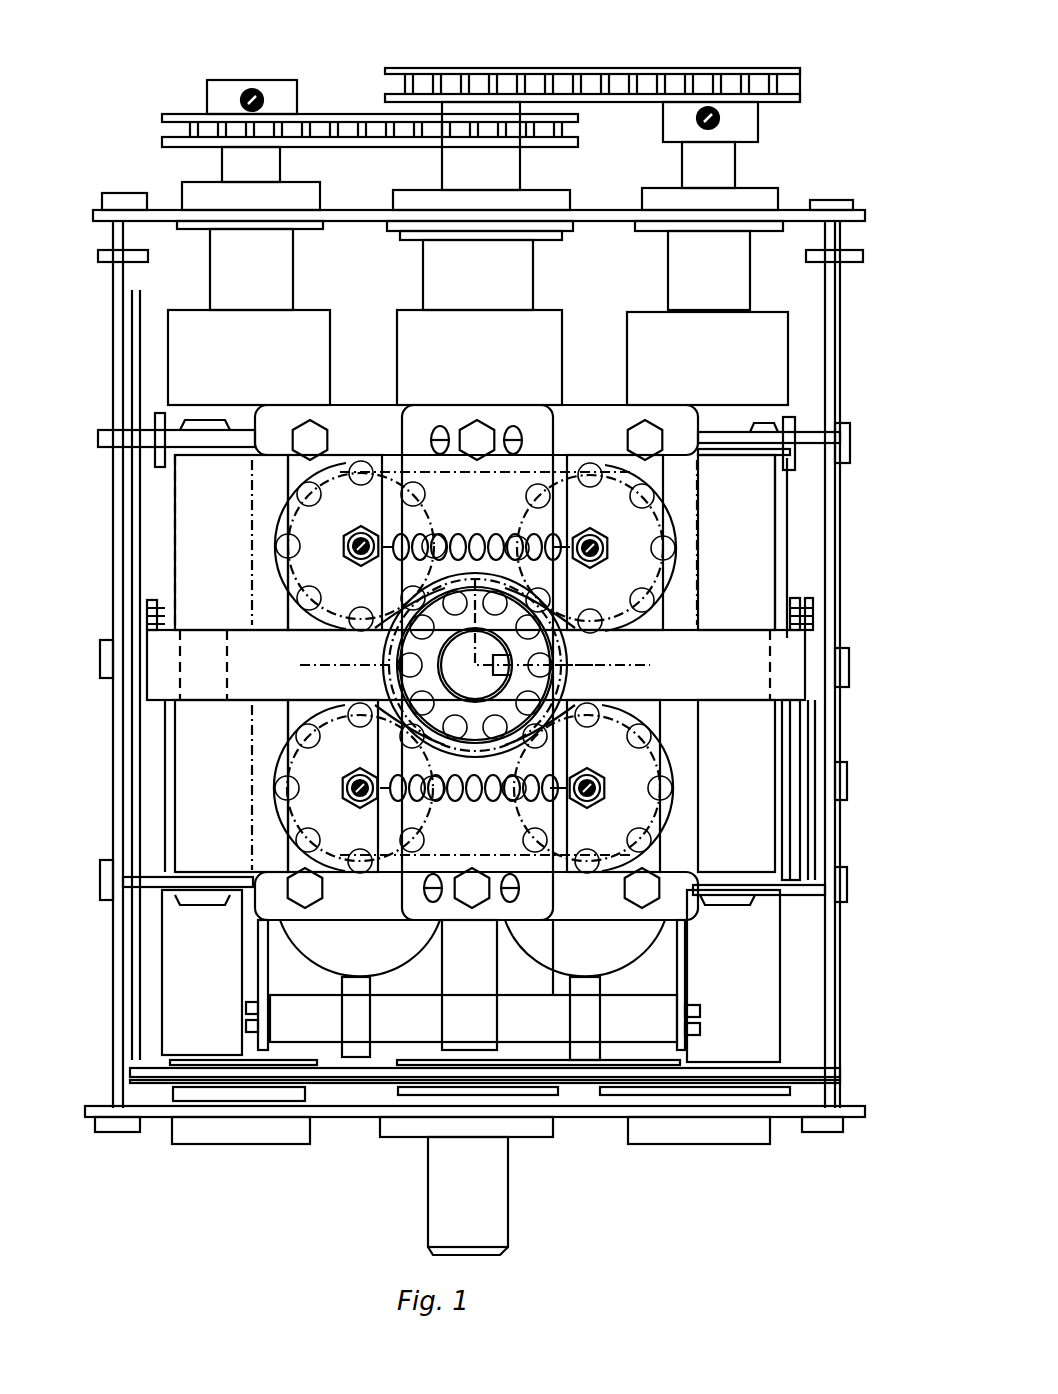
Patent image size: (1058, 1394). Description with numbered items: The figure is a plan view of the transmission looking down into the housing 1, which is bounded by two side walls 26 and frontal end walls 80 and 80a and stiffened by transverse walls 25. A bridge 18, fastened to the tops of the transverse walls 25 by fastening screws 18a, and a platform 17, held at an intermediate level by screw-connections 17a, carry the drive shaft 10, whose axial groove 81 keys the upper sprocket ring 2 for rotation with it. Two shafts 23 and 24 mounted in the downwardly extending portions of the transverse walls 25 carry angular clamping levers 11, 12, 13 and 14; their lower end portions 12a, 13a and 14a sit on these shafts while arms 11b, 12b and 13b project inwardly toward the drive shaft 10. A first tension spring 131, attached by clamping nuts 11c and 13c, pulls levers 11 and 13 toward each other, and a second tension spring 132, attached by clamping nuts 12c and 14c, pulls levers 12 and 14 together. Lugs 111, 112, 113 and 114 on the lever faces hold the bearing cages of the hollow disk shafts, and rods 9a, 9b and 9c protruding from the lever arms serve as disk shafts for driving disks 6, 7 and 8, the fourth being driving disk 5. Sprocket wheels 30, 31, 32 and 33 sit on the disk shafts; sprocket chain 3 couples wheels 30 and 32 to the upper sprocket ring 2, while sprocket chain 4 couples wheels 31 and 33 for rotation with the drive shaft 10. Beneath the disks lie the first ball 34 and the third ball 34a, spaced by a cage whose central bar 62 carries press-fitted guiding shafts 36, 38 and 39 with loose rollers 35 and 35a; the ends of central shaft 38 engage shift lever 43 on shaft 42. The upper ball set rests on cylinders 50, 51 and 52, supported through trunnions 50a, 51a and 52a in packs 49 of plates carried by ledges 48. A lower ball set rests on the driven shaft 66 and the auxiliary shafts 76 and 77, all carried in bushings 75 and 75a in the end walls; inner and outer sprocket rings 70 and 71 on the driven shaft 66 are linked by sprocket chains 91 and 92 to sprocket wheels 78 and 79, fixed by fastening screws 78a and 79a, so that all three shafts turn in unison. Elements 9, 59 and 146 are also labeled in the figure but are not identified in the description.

The housing 1 is at (838, 385).
The upper sprocket ring 2 is at (435, 725).
The upper sprocket chain 3 is at (360, 685).
The lower sprocket chain 4 is at (425, 465).
The driving disk 5 is at (688, 837).
The driving disk 6 is at (698, 537).
The driving disk 7 is at (248, 740).
The driving disk 8 is at (265, 493).
The tension nut 9 is at (606, 790).
The rod 9a is at (610, 552).
The rod 9b is at (343, 790).
The rod 9c is at (342, 545).
The drive shaft 10 is at (491, 665).
The clamping lever 11 is at (736, 786).
The lever arm 11b is at (662, 720).
The clamping nut 11c is at (587, 778).
The clamping lever 12 is at (736, 542).
The lower end portion 12a is at (777, 500).
The lever arm 12b is at (638, 650).
The clamping nut 12c is at (642, 536).
The clamping lever 13 is at (231, 786).
The lower end portion 13a is at (168, 795).
The lever arm 13b is at (345, 674).
The clamping nut 13c is at (333, 768).
The clamping lever 14 is at (231, 542).
The lower end portion 14a is at (175, 514).
The clamping nut 14c is at (355, 534).
The platform 17 is at (345, 408).
The screw-connection 17a is at (307, 422).
The bridge 18 is at (548, 405).
The fastening screw 18a is at (490, 421).
The shaft 23 is at (798, 431).
The shaft 24 is at (168, 435).
The transverse wall 25 is at (186, 426).
The side wall 26 is at (125, 365).
The sprocket wheel 30 is at (613, 786).
The sprocket wheel 31 is at (615, 542).
The sprocket wheel 32 is at (333, 786).
The sprocket wheel 33 is at (335, 542).
The first ball 34 is at (585, 948).
The third ball 34a is at (360, 948).
The loose roller 35 is at (583, 1060).
The loose roller 35a is at (345, 1157).
The guiding shaft 36 is at (325, 1115).
The central guiding shaft 38 is at (847, 772).
The guiding shaft 39 is at (152, 476).
The shaft 42 is at (100, 665).
The shift lever 43 is at (798, 732).
The ledge 48 is at (100, 934).
The pack of transverse plates 49 is at (801, 602).
The cylinder 50 is at (220, 1093).
The trunnion 50a is at (235, 1055).
The cylinder 51 is at (285, 1075).
The trunnion 51a is at (540, 1112).
The cylinder 52 is at (773, 995).
The trunnion 52a is at (696, 1069).
The rod 59 is at (808, 835).
The central bar 62 is at (478, 998).
The driven shaft 66 is at (560, 320).
The inner sprocket ring 70 is at (566, 137).
The outer sprocket ring 71 is at (498, 62).
The bushing 75 is at (250, 1145).
The bushing 75a is at (322, 190).
The auxiliary shaft 76 is at (325, 318).
The auxiliary shaft 77 is at (798, 344).
The sprocket wheel 78 is at (177, 111).
The fastening screw 78a is at (254, 89).
The sprocket wheel 79 is at (727, 70).
The fastening screw 79a is at (695, 122).
The frontal end wall 80 is at (850, 1123).
The frontal end wall 80a is at (863, 218).
The axial groove 81 is at (510, 678).
The sprocket chain 91 is at (343, 110).
The sprocket chain 92 is at (800, 88).
The lug 111 is at (582, 852).
The lug 112 is at (560, 454).
The lug 113 is at (315, 865).
The lug 114 is at (365, 446).
The first tension spring 131 is at (480, 801).
The tension spring 132 is at (528, 536).
The sprocket 146 is at (330, 640).